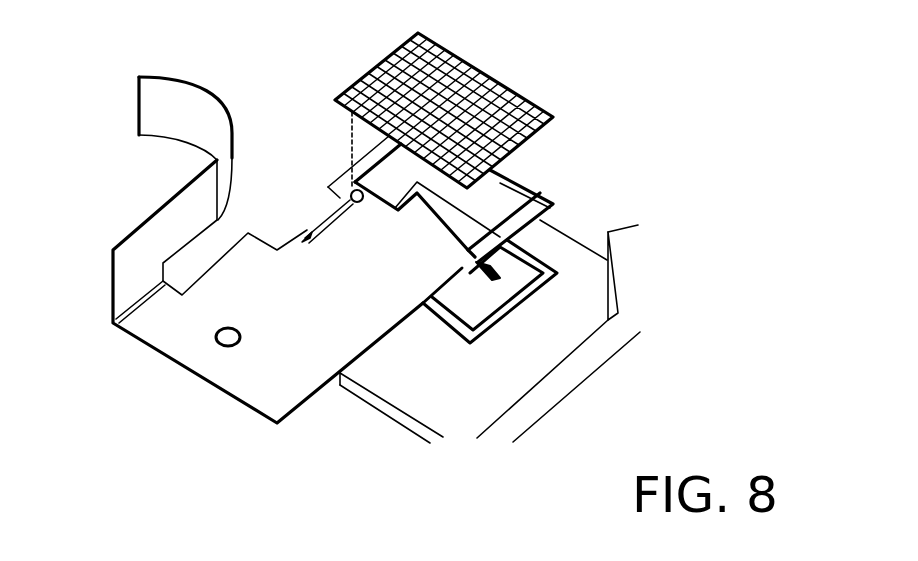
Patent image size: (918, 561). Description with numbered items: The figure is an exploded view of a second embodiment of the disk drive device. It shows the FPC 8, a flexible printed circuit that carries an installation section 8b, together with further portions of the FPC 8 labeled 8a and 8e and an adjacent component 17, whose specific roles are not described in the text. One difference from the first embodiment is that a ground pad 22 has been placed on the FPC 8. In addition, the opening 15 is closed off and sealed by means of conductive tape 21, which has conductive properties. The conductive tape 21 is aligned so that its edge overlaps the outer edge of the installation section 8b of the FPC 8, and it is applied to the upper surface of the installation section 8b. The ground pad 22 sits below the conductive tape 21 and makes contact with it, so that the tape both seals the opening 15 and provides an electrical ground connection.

The FPC 8 is at (237, 377).
The tab 8a is at (492, 286).
The installation section 8b is at (560, 203).
The plate edge portion 8e is at (425, 238).
The opening 15 is at (373, 402).
The rectangular ring 17 is at (528, 303).
The conductive tape 21 is at (513, 88).
The ground pad 22 is at (357, 203).